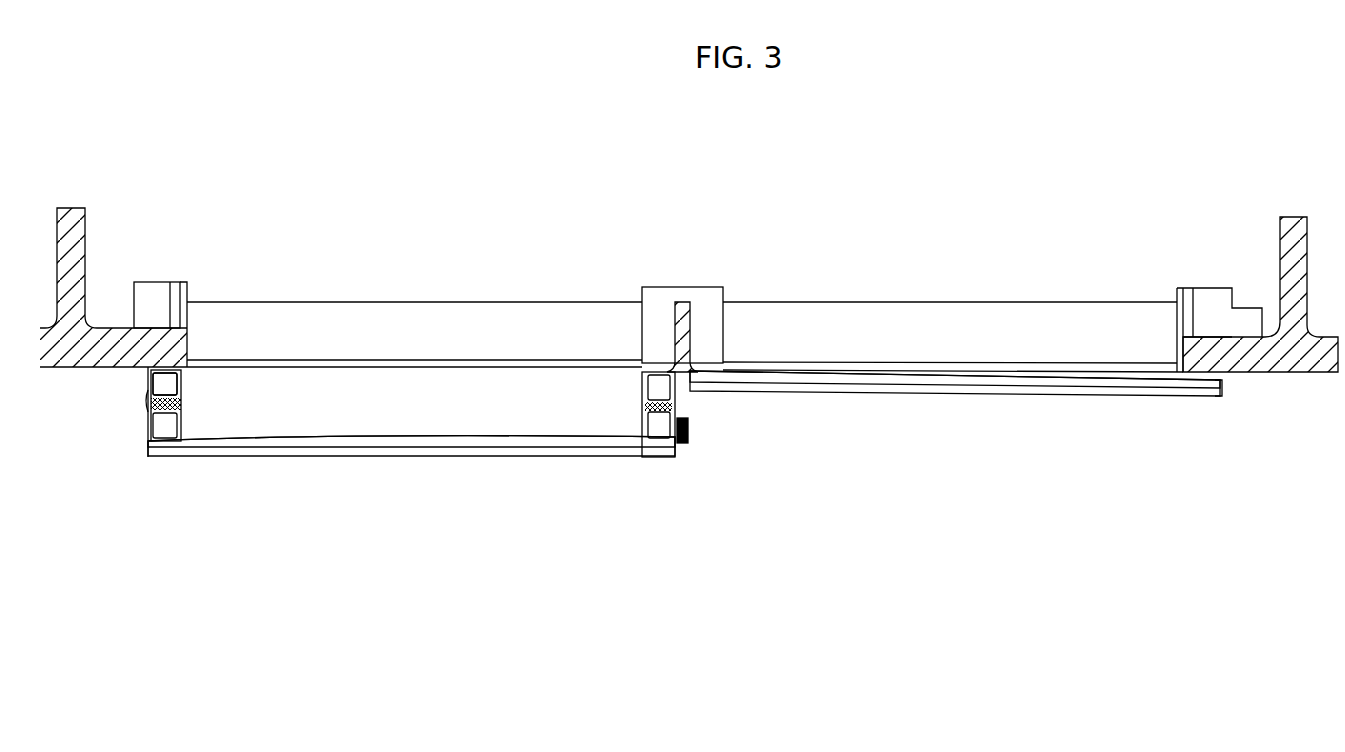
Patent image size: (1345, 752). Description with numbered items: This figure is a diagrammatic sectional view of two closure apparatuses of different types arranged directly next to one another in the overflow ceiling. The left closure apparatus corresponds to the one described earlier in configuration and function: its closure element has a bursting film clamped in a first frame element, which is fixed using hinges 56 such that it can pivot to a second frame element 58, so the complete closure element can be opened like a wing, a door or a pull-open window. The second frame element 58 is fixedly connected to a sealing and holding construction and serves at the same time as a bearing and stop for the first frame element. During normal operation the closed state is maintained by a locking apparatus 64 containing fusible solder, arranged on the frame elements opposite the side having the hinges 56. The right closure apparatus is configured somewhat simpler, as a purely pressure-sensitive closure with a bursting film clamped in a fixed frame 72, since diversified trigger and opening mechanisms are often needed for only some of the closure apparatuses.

The hinges 56 is at (147, 400).
The second frame element 58 is at (185, 381).
The locking apparatus 64 is at (700, 427).
The fixed frame 72 is at (1222, 375).